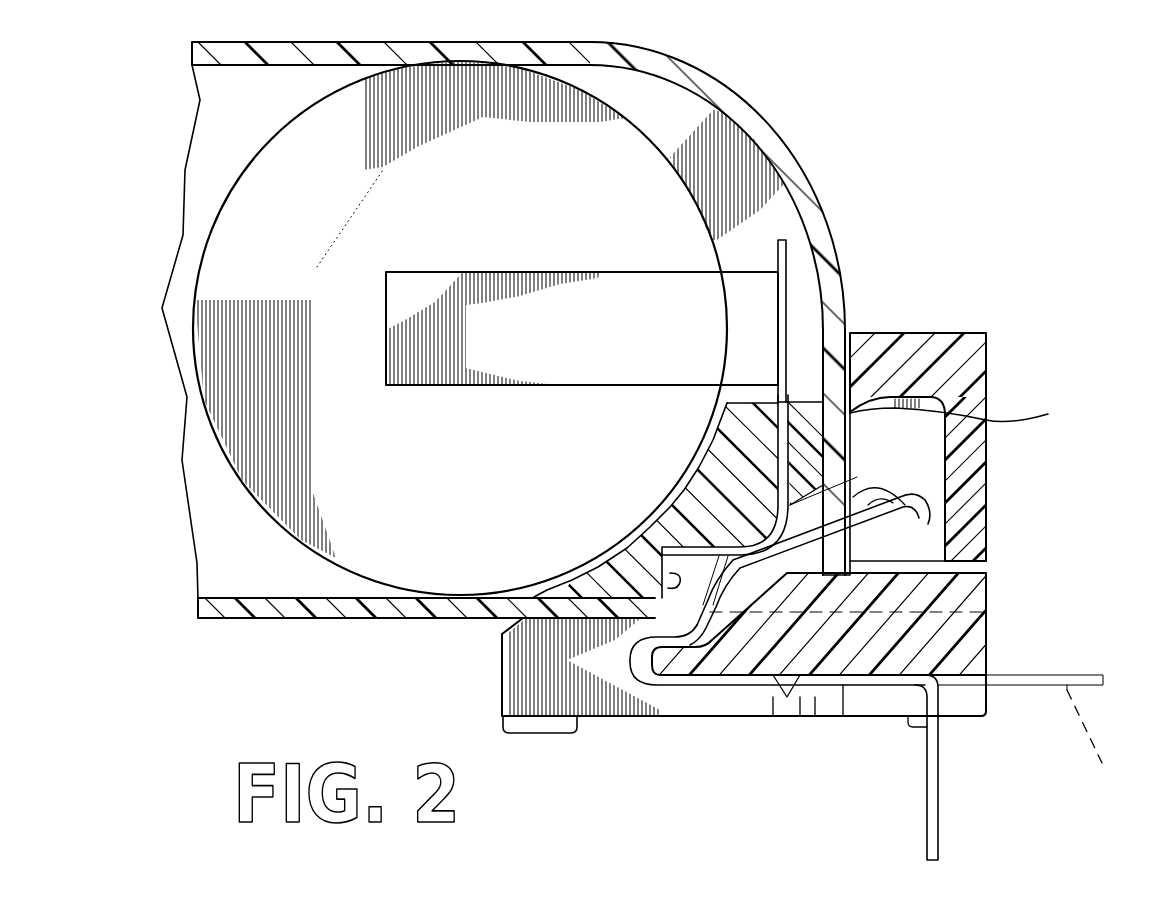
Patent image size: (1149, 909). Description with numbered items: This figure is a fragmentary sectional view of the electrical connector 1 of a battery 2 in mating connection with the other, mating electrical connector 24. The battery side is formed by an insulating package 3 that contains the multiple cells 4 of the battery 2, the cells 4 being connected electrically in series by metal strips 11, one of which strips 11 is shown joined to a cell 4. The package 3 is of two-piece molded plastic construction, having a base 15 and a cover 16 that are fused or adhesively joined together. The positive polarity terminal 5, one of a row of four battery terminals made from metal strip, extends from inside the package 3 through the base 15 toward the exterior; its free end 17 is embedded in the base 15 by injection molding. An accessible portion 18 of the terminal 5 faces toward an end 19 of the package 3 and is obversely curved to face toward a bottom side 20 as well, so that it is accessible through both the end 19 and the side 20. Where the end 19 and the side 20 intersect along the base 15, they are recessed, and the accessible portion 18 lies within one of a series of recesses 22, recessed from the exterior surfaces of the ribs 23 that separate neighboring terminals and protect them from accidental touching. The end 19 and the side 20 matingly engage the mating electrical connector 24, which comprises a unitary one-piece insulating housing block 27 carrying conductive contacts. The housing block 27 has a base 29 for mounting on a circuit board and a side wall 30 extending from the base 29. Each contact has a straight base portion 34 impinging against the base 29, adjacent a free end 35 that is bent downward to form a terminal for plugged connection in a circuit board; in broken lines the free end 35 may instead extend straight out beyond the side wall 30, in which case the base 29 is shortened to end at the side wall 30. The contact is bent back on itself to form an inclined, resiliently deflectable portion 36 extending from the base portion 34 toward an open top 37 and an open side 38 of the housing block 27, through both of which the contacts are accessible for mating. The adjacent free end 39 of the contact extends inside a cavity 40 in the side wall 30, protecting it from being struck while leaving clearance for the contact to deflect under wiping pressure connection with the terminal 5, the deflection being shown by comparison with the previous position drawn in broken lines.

The electrical connector 1 is at (491, 311).
The battery 2 is at (220, 182).
The insulating package 3 is at (172, 53).
The cells 4 is at (527, 226).
The positive polarity terminal 5 is at (762, 431).
The metal strips 11 is at (630, 343).
The base 15 is at (348, 620).
The cover 16 is at (824, 200).
The free end 17 is at (665, 530).
The accessible portion 18 is at (678, 528).
The end 19 is at (966, 409).
The bottom side 20 is at (638, 619).
The recesses 22 is at (595, 592).
The ribs 23 is at (986, 561).
The mating electrical connector 24 is at (1005, 357).
The housing block 27 is at (970, 645).
The base 29 is at (743, 663).
The side wall 30 is at (986, 497).
The base portion 34 is at (843, 687).
The free end 35 is at (938, 820).
The deflectable portion 36 is at (873, 513).
The open top 37 is at (848, 347).
The open side 38 is at (545, 594).
The free end 39 is at (925, 497).
The cavity 40 is at (945, 488).